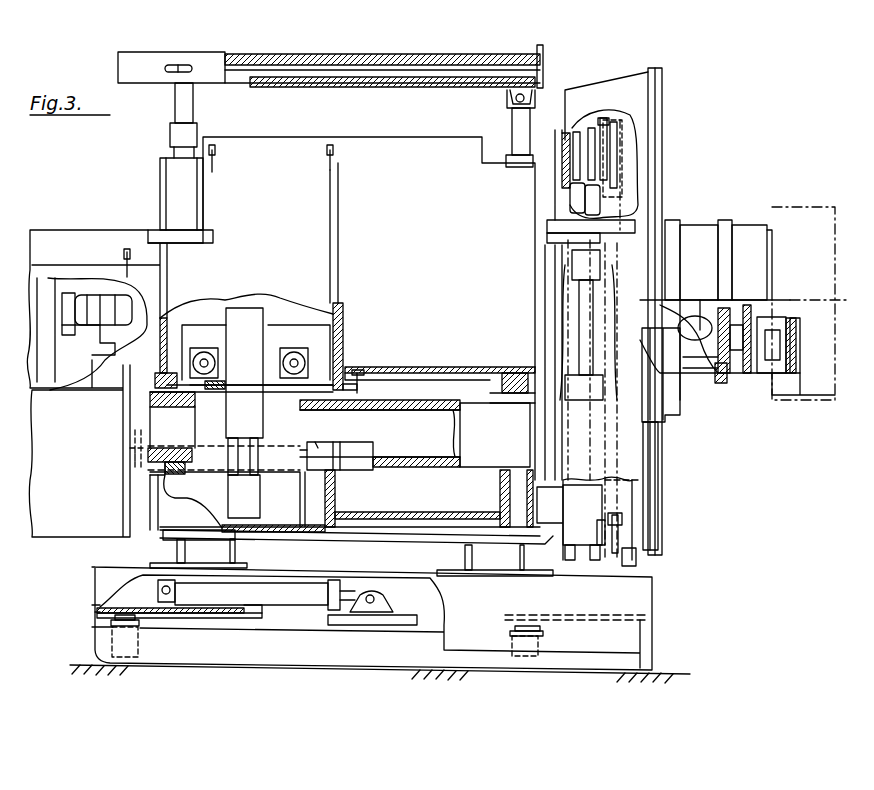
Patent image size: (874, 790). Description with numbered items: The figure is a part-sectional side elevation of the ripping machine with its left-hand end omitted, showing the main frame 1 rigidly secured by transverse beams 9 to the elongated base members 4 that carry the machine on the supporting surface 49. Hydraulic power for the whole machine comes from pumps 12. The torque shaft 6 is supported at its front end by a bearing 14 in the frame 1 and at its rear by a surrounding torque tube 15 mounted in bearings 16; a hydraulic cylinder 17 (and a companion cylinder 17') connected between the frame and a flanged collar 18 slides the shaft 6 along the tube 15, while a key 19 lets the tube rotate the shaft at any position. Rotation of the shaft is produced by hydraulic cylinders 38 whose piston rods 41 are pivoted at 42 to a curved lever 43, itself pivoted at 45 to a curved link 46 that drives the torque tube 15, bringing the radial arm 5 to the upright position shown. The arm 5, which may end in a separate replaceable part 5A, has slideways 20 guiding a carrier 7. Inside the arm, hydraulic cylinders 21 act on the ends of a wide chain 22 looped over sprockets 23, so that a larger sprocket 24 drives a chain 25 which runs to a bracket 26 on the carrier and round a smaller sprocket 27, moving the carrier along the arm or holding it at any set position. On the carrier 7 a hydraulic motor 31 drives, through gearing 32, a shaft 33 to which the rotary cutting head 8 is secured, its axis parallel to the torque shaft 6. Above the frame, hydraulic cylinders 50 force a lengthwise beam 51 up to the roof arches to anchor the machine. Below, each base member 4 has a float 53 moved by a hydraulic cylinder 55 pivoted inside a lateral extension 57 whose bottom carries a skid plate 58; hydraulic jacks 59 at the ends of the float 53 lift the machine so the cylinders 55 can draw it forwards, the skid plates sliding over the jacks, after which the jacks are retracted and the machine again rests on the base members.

The main frame 1 is at (369, 263).
The base member 4 is at (648, 600).
The radial arm 5 is at (632, 455).
The separate part of the arm 5A is at (627, 82).
The torque shaft 6 is at (440, 462).
The carrier 7 is at (660, 400).
The rotary cutting head 8 is at (795, 395).
The transverse beam 9 is at (185, 555).
The pump 12 is at (75, 332).
The bearing 14 is at (512, 372).
The torque tube 15 is at (310, 472).
The bearing 16 is at (348, 382).
The hydraulic cylinder 17 is at (336, 471).
The bushing 17' is at (142, 468).
The flanged collar 18 is at (366, 388).
The key 19 is at (170, 398).
The slideway 20 is at (662, 162).
The hydraulic cylinder 21 is at (582, 378).
The wide chain 22 is at (578, 200).
The sprocket 23 is at (592, 128).
The larger sprocket 24 is at (616, 140).
The chain 25 is at (632, 236).
The bracket 26 is at (623, 420).
The smaller sprocket 27 is at (618, 543).
The hydraulic motor 31 is at (700, 238).
The gearing 32 is at (745, 375).
The shaft 33 is at (775, 305).
The hydraulic cylinder 38 is at (198, 320).
The piston rod 41 is at (204, 375).
The pivot 42 is at (206, 352).
The curved lever 43 is at (247, 318).
The pivot 45 is at (262, 470).
The curved link 46 is at (232, 506).
The supporting surface 49 is at (668, 672).
The hydraulic cylinder 50 is at (172, 153).
The lengthwise beam 51 is at (448, 56).
The float 53 is at (272, 636).
The hydraulic cylinder 55 is at (312, 590).
The lateral extension 57 is at (255, 620).
The skid plate 58 is at (215, 614).
The hydraulic jack 59 is at (138, 620).